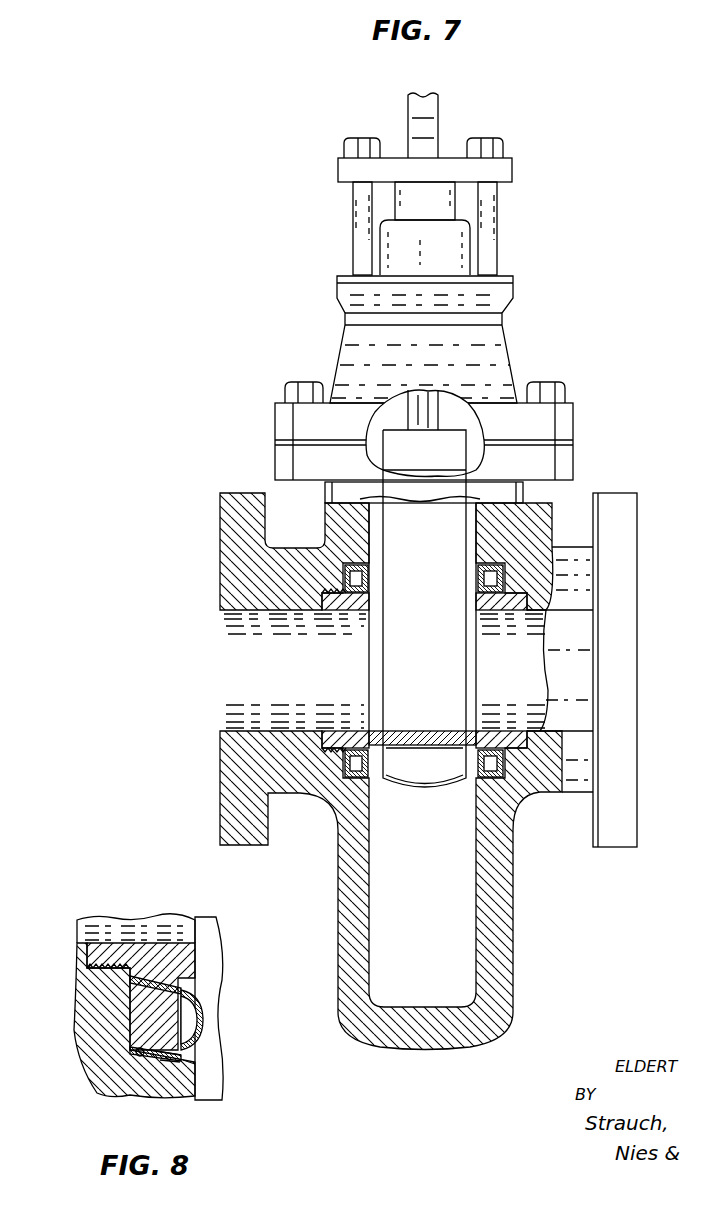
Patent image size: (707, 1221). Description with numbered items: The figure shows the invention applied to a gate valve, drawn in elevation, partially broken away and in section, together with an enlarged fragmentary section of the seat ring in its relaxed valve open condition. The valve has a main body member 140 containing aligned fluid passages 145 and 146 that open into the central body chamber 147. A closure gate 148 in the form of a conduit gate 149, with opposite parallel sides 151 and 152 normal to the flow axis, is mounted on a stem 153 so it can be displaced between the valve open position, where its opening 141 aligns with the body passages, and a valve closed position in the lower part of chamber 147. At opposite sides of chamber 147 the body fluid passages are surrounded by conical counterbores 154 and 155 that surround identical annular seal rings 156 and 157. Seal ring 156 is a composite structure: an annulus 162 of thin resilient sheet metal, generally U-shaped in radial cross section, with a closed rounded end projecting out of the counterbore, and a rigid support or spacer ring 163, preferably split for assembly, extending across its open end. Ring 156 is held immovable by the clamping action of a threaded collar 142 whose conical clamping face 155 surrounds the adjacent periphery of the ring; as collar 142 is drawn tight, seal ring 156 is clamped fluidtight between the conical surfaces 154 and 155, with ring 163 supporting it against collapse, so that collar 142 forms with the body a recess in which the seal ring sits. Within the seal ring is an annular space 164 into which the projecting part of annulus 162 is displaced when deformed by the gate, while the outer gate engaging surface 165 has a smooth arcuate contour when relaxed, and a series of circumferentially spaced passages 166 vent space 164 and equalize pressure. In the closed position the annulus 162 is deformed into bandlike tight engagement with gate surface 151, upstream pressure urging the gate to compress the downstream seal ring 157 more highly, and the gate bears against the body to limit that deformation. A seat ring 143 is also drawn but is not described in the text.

In FIG. 7, the main body member 140 is at (301, 775).
In FIG. 8, the main body member 140 is at (87, 1024).
In FIG. 7, the opening 141 is at (406, 731).
In FIG. 7, the threaded collar 142 is at (345, 742).
In FIG. 8, the threaded collar 142 is at (185, 964).
In FIG. 7, the right seat ring 143 is at (500, 731).
In FIG. 7, the fluid passage 145 is at (277, 730).
In FIG. 8, the fluid passage 145 is at (113, 943).
In FIG. 7, the fluid passage 146 is at (540, 728).
In FIG. 7, the central body chamber 147 is at (376, 524).
In FIG. 8, the central body chamber 147 is at (208, 925).
In FIG. 7, the closure gate 148 is at (439, 654).
In FIG. 7, the conduit gate 149 is at (455, 500).
In FIG. 7, the side of gate 151 is at (360, 640).
In FIG. 7, the side of gate 152 is at (447, 616).
In FIG. 7, the stem 153 is at (430, 114).
In FIG. 7, the conical counterbore 154 is at (360, 770).
In FIG. 8, the conical counterbore 154 is at (165, 1062).
In FIG. 7, the conical counterbore / conical clamping face 155 is at (500, 575).
In FIG. 8, the conical counterbore / conical clamping face 155 is at (183, 996).
In FIG. 7, the annular seal ring 156 is at (384, 572).
In FIG. 8, the annular seal ring 156 is at (193, 1066).
In FIG. 7, the annular seal ring 157 is at (467, 587).
In FIG. 8, the annulus 162 is at (185, 1054).
In FIG. 8, the support or spacer ring 163 is at (137, 1056).
In FIG. 8, the annular space 164 is at (192, 1015).
In FIG. 7, the outer gate engaging surface 165 is at (366, 775).
In FIG. 8, the outer gate engaging surface 165 is at (200, 1043).
In FIG. 8, the passages 166 is at (202, 1025).